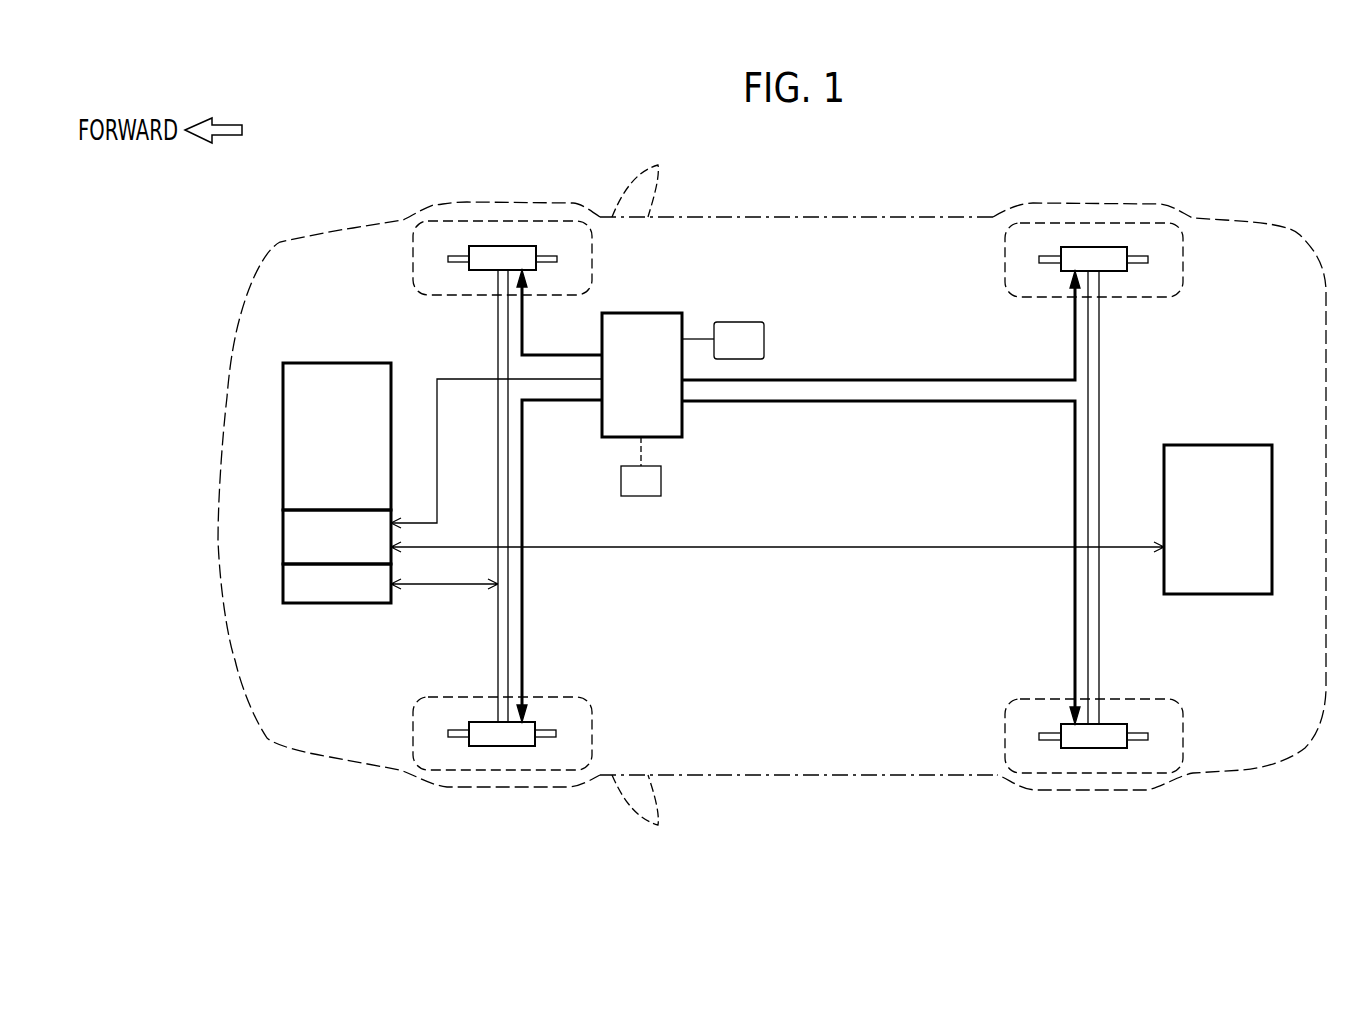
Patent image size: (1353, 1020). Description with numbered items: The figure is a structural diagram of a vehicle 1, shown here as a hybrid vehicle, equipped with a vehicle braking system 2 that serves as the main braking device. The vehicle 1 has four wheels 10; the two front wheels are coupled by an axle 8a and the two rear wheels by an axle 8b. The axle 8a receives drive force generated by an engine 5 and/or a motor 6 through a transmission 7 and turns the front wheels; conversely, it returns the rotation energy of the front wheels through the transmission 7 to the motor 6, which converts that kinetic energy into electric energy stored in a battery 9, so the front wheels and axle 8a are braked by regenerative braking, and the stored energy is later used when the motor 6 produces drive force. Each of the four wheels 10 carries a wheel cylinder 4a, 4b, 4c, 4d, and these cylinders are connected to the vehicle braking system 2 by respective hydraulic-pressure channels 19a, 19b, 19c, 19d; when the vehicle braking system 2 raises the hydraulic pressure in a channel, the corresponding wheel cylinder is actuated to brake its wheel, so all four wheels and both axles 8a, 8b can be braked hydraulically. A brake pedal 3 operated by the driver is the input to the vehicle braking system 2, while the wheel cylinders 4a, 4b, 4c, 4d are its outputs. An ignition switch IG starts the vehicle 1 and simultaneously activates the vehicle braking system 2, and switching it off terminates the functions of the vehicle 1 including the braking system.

The vehicle 1 is at (1063, 133).
The vehicle braking system 2 is at (647, 313).
The brake pedal 3 is at (764, 339).
The wheel cylinder 4a is at (483, 265).
The wheel cylinder 4b is at (482, 727).
The wheel cylinder 4c is at (1113, 267).
The wheel cylinder 4d is at (1113, 728).
The engine 5 is at (283, 429).
The motor 6 is at (283, 537).
The transmission 7 is at (283, 583).
The axle 8a is at (497, 648).
The axle 8b is at (1100, 652).
The battery 9 is at (1220, 445).
The wheel 10 is at (478, 221).
The hydraulic-pressure channel 19a is at (525, 330).
The hydraulic-pressure channel 19b is at (524, 627).
The hydraulic-pressure channel 19c is at (1073, 330).
The hydraulic-pressure channel 19d is at (1072, 628).
The ignition switch IG is at (661, 480).